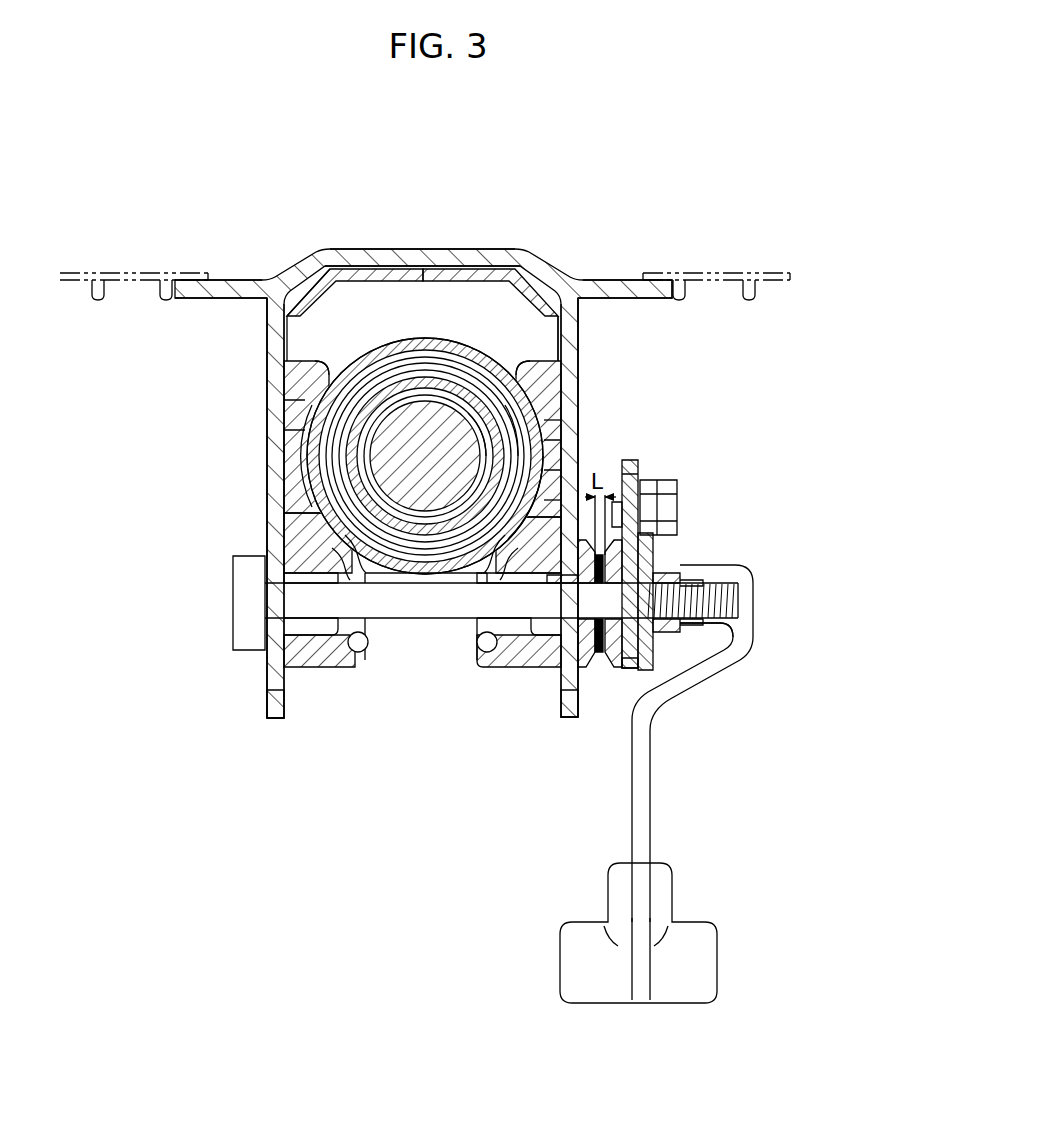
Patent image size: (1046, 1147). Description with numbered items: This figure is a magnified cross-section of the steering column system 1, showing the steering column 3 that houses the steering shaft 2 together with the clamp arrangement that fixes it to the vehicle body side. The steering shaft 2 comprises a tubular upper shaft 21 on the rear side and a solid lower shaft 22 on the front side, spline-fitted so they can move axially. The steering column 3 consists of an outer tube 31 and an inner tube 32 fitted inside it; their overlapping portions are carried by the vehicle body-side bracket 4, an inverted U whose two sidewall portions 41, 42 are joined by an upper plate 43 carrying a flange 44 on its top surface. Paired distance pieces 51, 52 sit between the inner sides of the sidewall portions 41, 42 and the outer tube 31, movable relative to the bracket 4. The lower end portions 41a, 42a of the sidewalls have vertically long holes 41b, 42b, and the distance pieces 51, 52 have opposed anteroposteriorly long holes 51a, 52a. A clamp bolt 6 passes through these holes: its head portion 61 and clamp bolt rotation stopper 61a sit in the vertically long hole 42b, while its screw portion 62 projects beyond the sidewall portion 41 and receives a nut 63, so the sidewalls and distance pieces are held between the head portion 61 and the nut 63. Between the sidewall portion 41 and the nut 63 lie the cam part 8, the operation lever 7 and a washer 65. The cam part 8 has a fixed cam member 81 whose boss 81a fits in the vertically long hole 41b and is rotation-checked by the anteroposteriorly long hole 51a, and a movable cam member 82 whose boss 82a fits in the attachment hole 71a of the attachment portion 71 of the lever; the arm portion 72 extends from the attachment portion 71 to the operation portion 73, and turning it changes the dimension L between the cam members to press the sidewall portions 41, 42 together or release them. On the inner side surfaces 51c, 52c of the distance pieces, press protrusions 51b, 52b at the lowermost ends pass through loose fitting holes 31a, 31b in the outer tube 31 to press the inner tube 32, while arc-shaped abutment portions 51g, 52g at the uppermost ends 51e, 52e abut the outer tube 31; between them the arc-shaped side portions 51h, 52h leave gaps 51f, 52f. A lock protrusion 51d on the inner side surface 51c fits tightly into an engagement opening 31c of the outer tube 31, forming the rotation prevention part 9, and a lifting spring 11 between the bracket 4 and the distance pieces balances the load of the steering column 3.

The steering column system 1 is at (690, 204).
The steering shaft 2 is at (498, 187).
The upper shaft 21 is at (457, 437).
The lower shaft 22 is at (480, 398).
The steering column 3 is at (400, 187).
The outer tube 31 is at (402, 368).
The loose fitting hole 31a is at (565, 503).
The loose fitting hole 31b is at (330, 495).
The engagement opening 31c is at (525, 438).
The inner tube 32 is at (388, 348).
The vehicle body-side bracket 4 is at (262, 359).
The sidewall portion 41 is at (578, 327).
The lower end portion 41a is at (562, 690).
The vertically long hole 41b is at (540, 665).
The sidewall portion 42 is at (267, 322).
The lower end portion 42a is at (270, 700).
The vertically long hole 42b is at (277, 670).
The upper plate 43 is at (455, 256).
The flange 44 is at (620, 280).
The distance piece 51 is at (548, 378).
The anteroposteriorly long hole 51a is at (485, 602).
The press protrusion 51b is at (440, 548).
The inner side surface 51c is at (558, 485).
The lock protrusion 51d is at (548, 460).
The uppermost end 51e is at (561, 345).
The gap 51f is at (425, 590).
The abutment portion 51g is at (508, 370).
The side portion 51h is at (603, 501).
The distance piece 52 is at (295, 383).
The anteroposteriorly long hole 52a is at (300, 660).
The press protrusion 52b is at (352, 665).
The inner side surface 52c is at (286, 411).
The uppermost end 52e is at (296, 305).
The gap 52f is at (320, 531).
The abutment portion 52g is at (338, 370).
The side portion 52h is at (305, 469).
The clamp bolt 6 is at (397, 605).
The head portion 61 is at (240, 654).
The clamp bolt rotation stopper 61a is at (250, 579).
The screw portion 62 is at (700, 590).
The nut 63 is at (668, 575).
The washer 65 is at (662, 526).
The operation lever 7 is at (656, 780).
The attachment portion 71 is at (690, 692).
The attachment hole 71a is at (722, 655).
The arm portion 72 is at (742, 608).
The operation portion 73 is at (716, 960).
The cam part 8 is at (620, 775).
The fixed cam member 81 is at (592, 615).
The boss 81a is at (520, 672).
The movable cam member 82 is at (620, 651).
The boss 82a is at (618, 546).
The rotation prevention part 9 is at (706, 372).
The lifting spring 11 is at (354, 652).